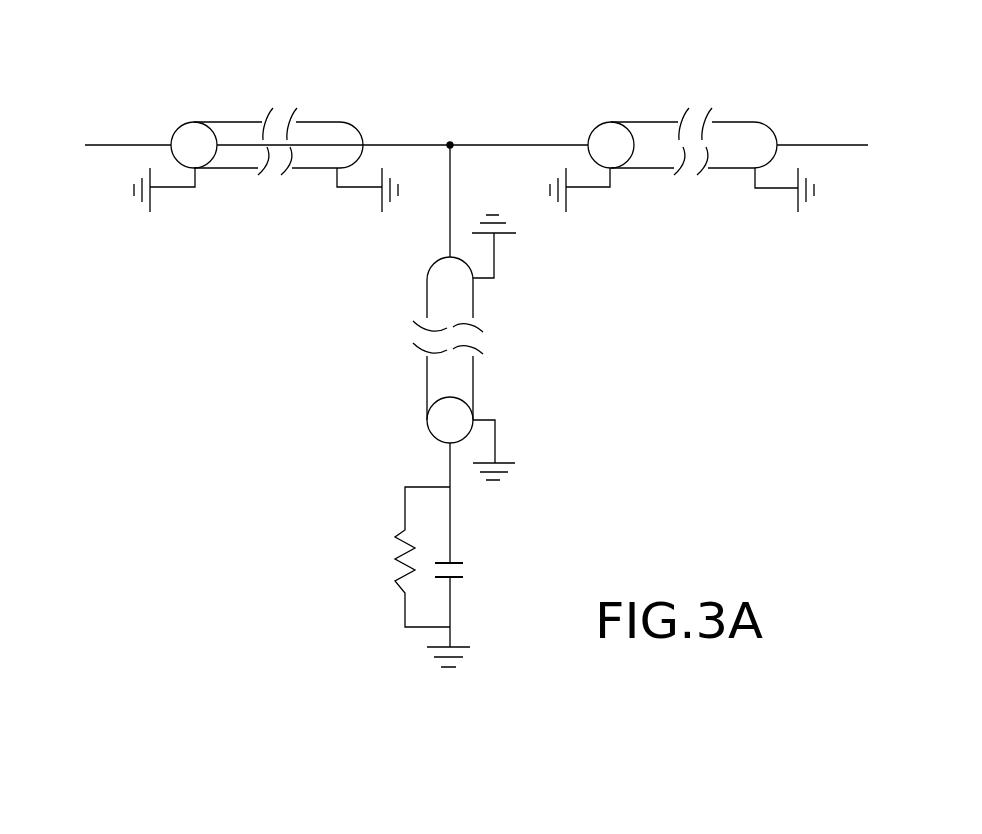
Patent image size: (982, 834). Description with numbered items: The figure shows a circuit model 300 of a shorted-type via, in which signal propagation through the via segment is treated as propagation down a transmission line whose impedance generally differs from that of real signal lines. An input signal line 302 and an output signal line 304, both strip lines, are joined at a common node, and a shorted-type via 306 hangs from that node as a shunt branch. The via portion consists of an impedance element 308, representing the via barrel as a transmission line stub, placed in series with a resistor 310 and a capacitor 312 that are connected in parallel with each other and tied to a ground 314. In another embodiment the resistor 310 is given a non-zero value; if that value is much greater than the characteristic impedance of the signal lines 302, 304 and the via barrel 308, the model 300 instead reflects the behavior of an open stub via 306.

The model 300 is at (499, 82).
The input signal line 302 is at (249, 93).
The output signal line 304 is at (672, 100).
The shorted-type via 306 is at (393, 403).
The impedance element 308 is at (501, 373).
The resistor 310 is at (318, 573).
The capacitor 312 is at (473, 541).
The ground 314 is at (425, 669).